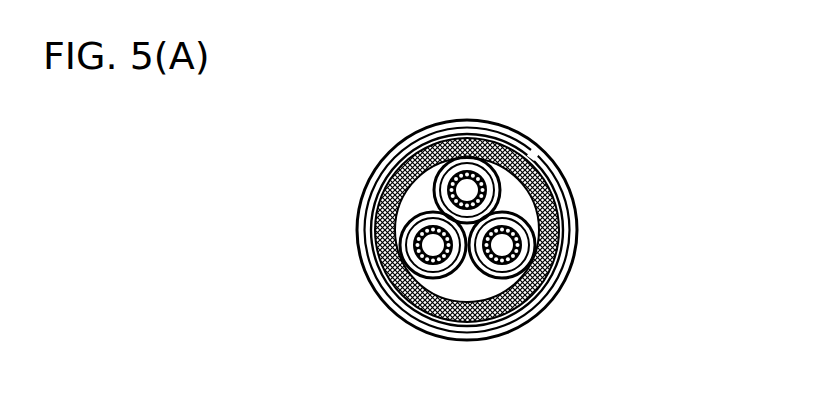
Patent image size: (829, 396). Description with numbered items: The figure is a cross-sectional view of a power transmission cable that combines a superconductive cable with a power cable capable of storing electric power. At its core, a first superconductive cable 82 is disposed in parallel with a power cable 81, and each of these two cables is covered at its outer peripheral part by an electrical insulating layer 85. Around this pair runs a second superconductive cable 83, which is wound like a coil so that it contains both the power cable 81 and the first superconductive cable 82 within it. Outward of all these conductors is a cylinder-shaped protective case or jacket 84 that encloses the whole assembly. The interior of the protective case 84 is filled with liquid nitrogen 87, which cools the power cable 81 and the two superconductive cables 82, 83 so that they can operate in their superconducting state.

The power cable 81 is at (392, 266).
The first superconductive cable 82 is at (470, 181).
The second superconductive cable 83 is at (565, 188).
The protective case 84 is at (498, 124).
The electrical insulating layer 85 is at (434, 160).
The liquid nitrogen 87 is at (543, 165).